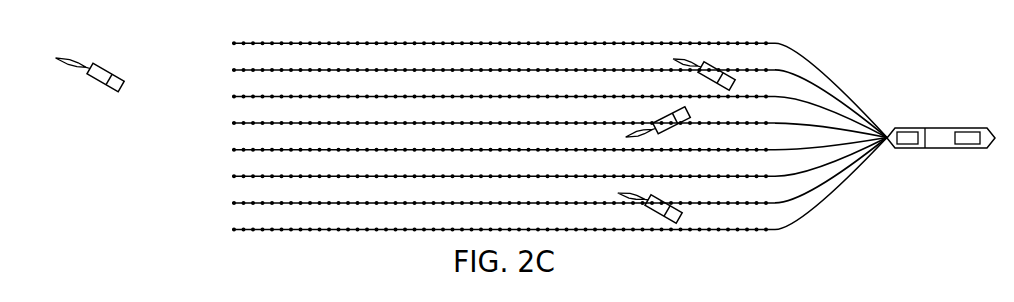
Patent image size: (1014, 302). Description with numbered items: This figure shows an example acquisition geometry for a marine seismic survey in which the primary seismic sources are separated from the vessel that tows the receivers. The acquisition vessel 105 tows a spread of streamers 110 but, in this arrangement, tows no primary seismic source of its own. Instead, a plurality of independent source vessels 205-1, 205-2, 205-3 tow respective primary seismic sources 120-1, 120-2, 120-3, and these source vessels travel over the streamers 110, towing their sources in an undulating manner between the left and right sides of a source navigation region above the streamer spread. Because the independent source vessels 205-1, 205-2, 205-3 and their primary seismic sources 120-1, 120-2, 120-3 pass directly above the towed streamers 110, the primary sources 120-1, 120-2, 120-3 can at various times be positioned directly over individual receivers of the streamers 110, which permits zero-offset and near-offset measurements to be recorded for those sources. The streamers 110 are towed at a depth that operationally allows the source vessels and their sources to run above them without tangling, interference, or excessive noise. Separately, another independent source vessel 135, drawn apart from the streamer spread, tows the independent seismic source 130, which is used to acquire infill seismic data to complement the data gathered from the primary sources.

The acquisition vessel 105 is at (961, 148).
The streamers 110 is at (309, 43).
The primary seismic source 120-1 is at (618, 193).
The primary seismic source 120-2 is at (625, 137).
The primary seismic source 120-3 is at (673, 59).
The independent source vessel 205-1 is at (668, 205).
The independent source vessel 205-2 is at (690, 118).
The independent source vessel 205-3 is at (720, 72).
The independent seismic source 130 is at (56, 58).
The independent source vessel 135 is at (106, 67).